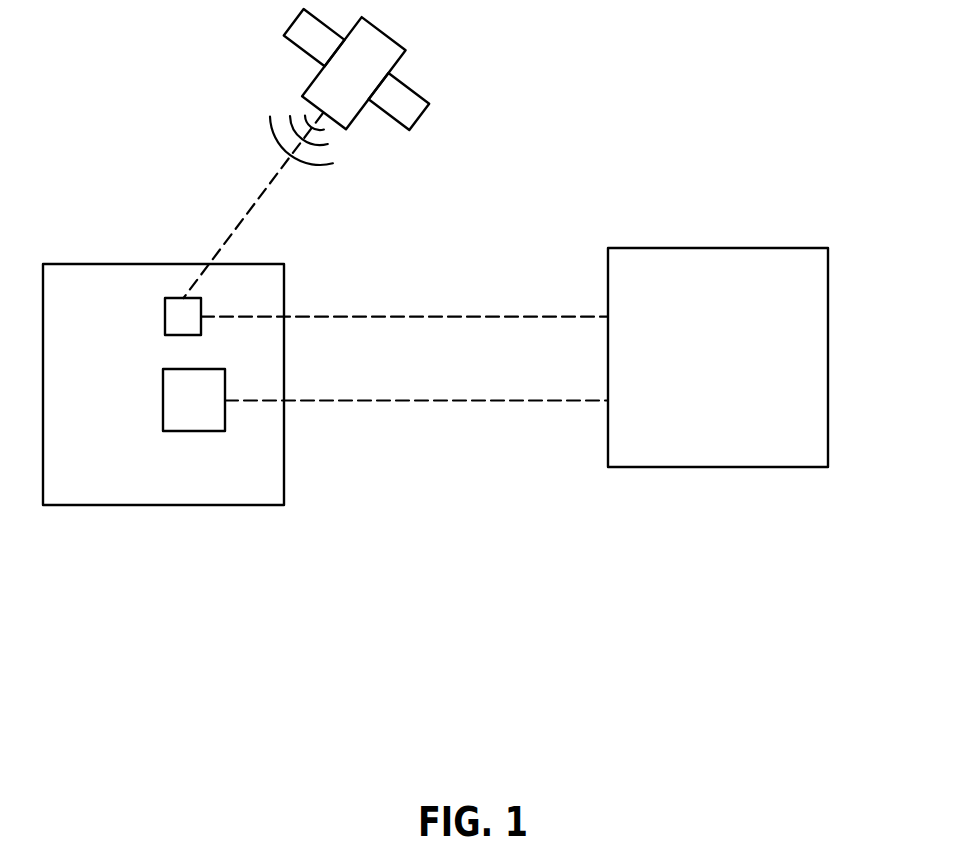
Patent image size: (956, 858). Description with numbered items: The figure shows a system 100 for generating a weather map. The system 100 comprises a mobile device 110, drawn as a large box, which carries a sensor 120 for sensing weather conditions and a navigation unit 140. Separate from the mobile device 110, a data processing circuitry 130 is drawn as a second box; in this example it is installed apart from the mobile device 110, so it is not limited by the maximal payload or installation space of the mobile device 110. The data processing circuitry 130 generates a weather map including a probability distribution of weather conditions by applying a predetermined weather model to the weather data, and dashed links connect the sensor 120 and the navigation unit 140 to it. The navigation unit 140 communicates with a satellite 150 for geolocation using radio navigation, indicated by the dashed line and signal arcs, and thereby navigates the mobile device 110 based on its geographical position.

The system 100 is at (616, 128).
The mobile device 110 is at (78, 264).
The sensor 120 is at (162, 389).
The data processing circuitry 130 is at (704, 248).
The navigation unit 140 is at (164, 316).
The satellite 150 is at (285, 33).